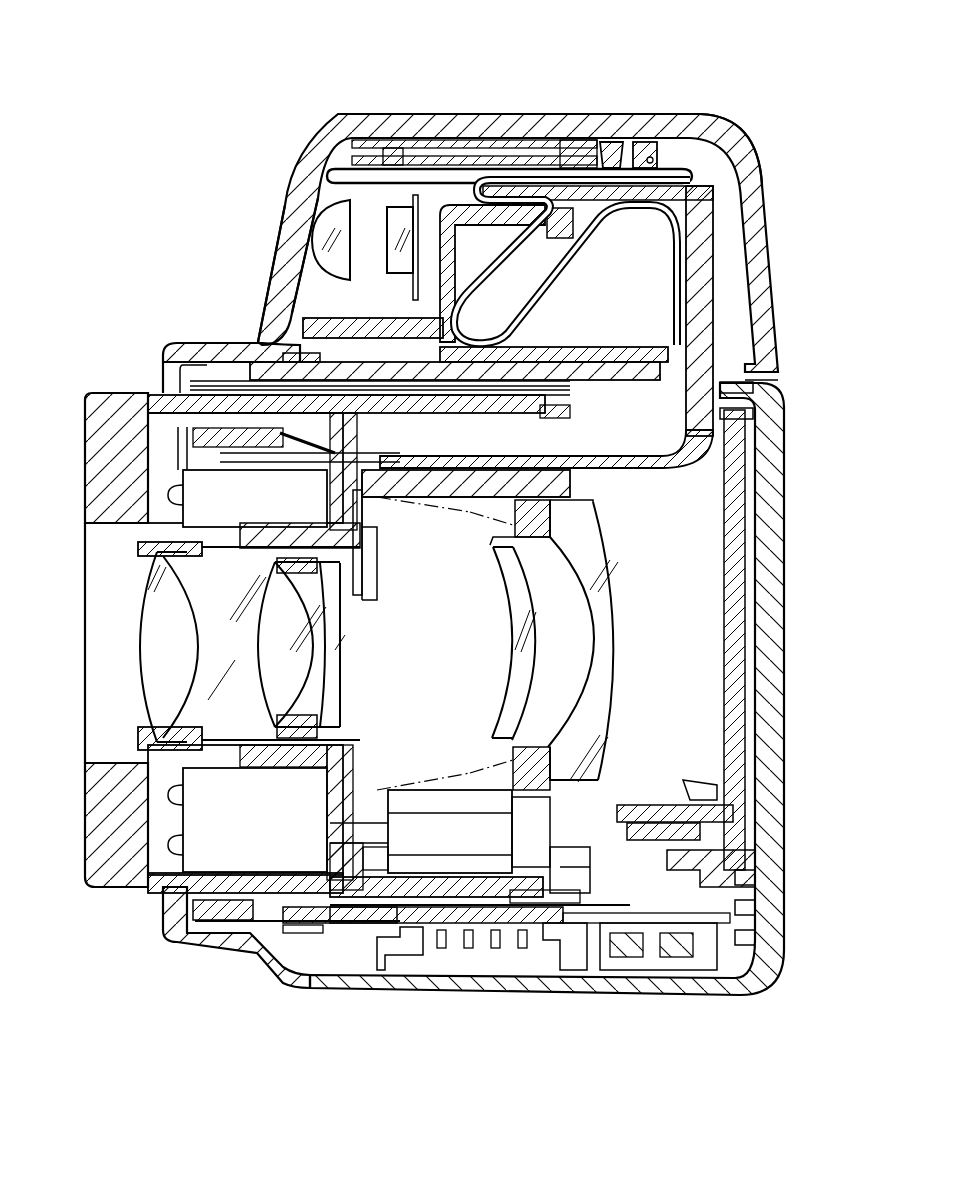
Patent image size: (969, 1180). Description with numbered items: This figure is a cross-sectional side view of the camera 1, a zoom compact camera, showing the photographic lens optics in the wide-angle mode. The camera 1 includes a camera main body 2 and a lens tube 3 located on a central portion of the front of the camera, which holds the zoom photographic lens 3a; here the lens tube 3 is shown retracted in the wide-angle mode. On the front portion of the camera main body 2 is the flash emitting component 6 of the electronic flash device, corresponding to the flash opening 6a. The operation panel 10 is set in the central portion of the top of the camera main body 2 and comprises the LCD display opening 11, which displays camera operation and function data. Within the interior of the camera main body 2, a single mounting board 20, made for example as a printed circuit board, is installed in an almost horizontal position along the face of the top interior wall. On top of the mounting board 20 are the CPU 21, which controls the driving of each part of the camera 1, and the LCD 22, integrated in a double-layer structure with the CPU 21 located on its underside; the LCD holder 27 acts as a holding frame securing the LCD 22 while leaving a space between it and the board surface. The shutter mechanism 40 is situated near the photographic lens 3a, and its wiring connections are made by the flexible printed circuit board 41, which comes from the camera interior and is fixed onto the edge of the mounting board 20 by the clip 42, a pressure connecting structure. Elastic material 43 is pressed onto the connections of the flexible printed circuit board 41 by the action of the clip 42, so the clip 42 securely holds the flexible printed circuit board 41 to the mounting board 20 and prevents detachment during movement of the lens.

The camera 1 is at (790, 95).
The camera main body 2 is at (585, 984).
The lens tube 3 is at (86, 893).
The zoom photographic lens 3a is at (116, 604).
The flash emitting component 6 is at (358, 200).
The flash opening 6a is at (284, 235).
The operation panel 10 is at (592, 82).
The LCD display opening 11 is at (523, 127).
The mounting board 20 is at (620, 145).
The CPU 21 is at (445, 153).
The LCD 22 is at (480, 143).
The LCD holder 27 is at (377, 147).
The shutter mechanism 40 is at (242, 412).
The flexible printed circuit board 41 is at (603, 230).
The clip 42 is at (714, 140).
The elastic material 43 is at (683, 147).